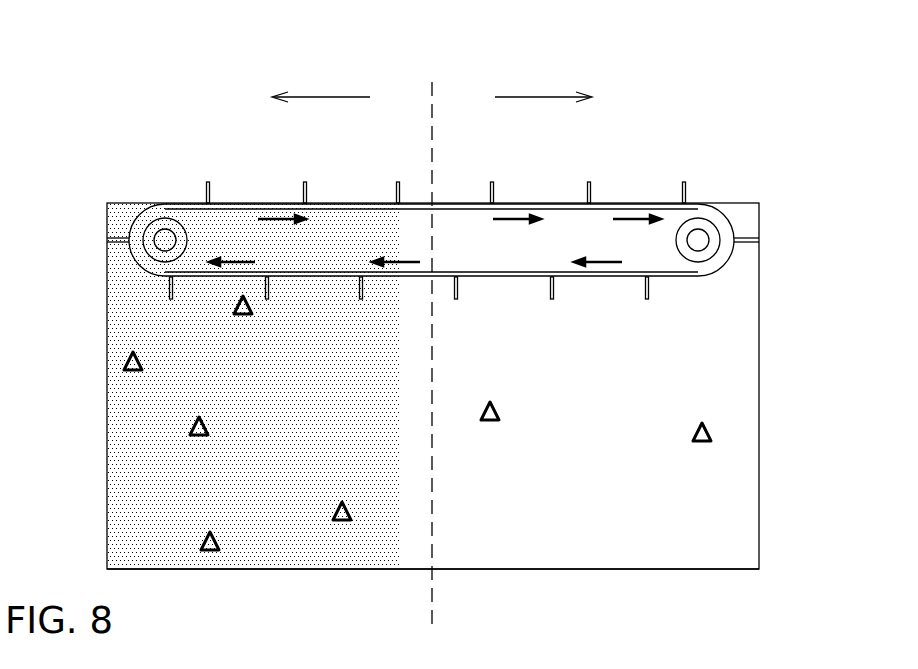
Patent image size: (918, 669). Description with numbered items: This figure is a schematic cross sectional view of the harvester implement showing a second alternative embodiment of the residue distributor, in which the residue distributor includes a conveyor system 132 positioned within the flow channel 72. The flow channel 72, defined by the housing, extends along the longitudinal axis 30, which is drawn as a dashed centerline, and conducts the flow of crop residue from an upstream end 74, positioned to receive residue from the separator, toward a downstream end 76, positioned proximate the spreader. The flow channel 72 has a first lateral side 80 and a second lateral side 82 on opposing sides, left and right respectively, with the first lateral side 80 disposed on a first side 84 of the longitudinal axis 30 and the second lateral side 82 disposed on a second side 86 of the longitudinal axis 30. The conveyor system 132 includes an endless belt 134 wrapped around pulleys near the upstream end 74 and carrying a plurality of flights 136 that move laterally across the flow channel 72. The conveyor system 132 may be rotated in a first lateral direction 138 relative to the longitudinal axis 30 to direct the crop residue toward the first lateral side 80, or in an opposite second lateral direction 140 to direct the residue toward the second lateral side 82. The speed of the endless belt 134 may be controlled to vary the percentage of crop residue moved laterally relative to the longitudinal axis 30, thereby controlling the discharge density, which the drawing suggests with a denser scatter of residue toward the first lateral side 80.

The longitudinal axis 30 is at (431, 96).
The flow channel 72 is at (759, 422).
The upstream end 74 is at (553, 203).
The downstream end 76 is at (571, 569).
The first lateral side 80 is at (338, 376).
The second lateral side 82 is at (557, 373).
The first side 84 is at (393, 153).
The second side 86 is at (497, 151).
The conveyor system 132 is at (435, 210).
The endless belt 134 is at (655, 203).
The flights 136 is at (205, 192).
The first lateral direction 138 is at (320, 97).
The second lateral direction 140 is at (525, 97).